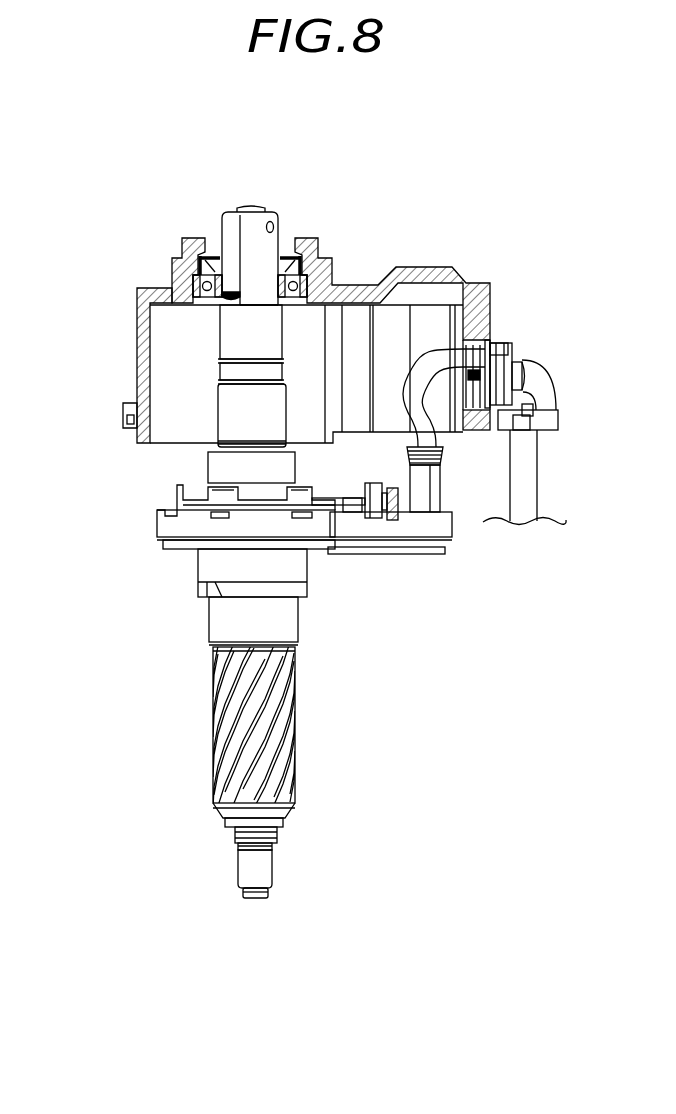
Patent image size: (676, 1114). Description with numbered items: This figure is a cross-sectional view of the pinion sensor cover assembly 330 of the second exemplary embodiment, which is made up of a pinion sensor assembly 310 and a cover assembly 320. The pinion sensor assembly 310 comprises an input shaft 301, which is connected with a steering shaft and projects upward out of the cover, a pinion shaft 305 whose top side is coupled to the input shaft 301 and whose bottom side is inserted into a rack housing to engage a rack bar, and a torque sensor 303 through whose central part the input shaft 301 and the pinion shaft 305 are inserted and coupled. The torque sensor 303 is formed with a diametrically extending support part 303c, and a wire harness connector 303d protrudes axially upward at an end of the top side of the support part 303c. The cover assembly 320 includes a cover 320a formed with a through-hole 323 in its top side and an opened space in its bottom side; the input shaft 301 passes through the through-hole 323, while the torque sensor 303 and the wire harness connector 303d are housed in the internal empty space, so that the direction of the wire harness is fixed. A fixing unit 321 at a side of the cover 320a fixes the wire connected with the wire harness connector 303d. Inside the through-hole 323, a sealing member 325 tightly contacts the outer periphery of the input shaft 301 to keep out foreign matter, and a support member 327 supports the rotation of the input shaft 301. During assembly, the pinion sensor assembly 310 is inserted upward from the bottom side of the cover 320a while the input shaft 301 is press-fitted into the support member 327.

The pinion sensor cover assembly 330 is at (70, 154).
The cover assembly 320 is at (462, 238).
The cover 320a is at (143, 337).
The through-hole 323 is at (205, 224).
The sealing member 325 is at (182, 258).
The support member 327 is at (195, 290).
The input shaft 301 is at (263, 247).
The fixing unit 321 is at (518, 330).
The torque sensor 303 is at (160, 525).
The support part 303c is at (377, 530).
The wire harness connector 303d is at (433, 494).
The pinion shaft 305 is at (215, 620).
The pinion sensor assembly 310 is at (323, 679).